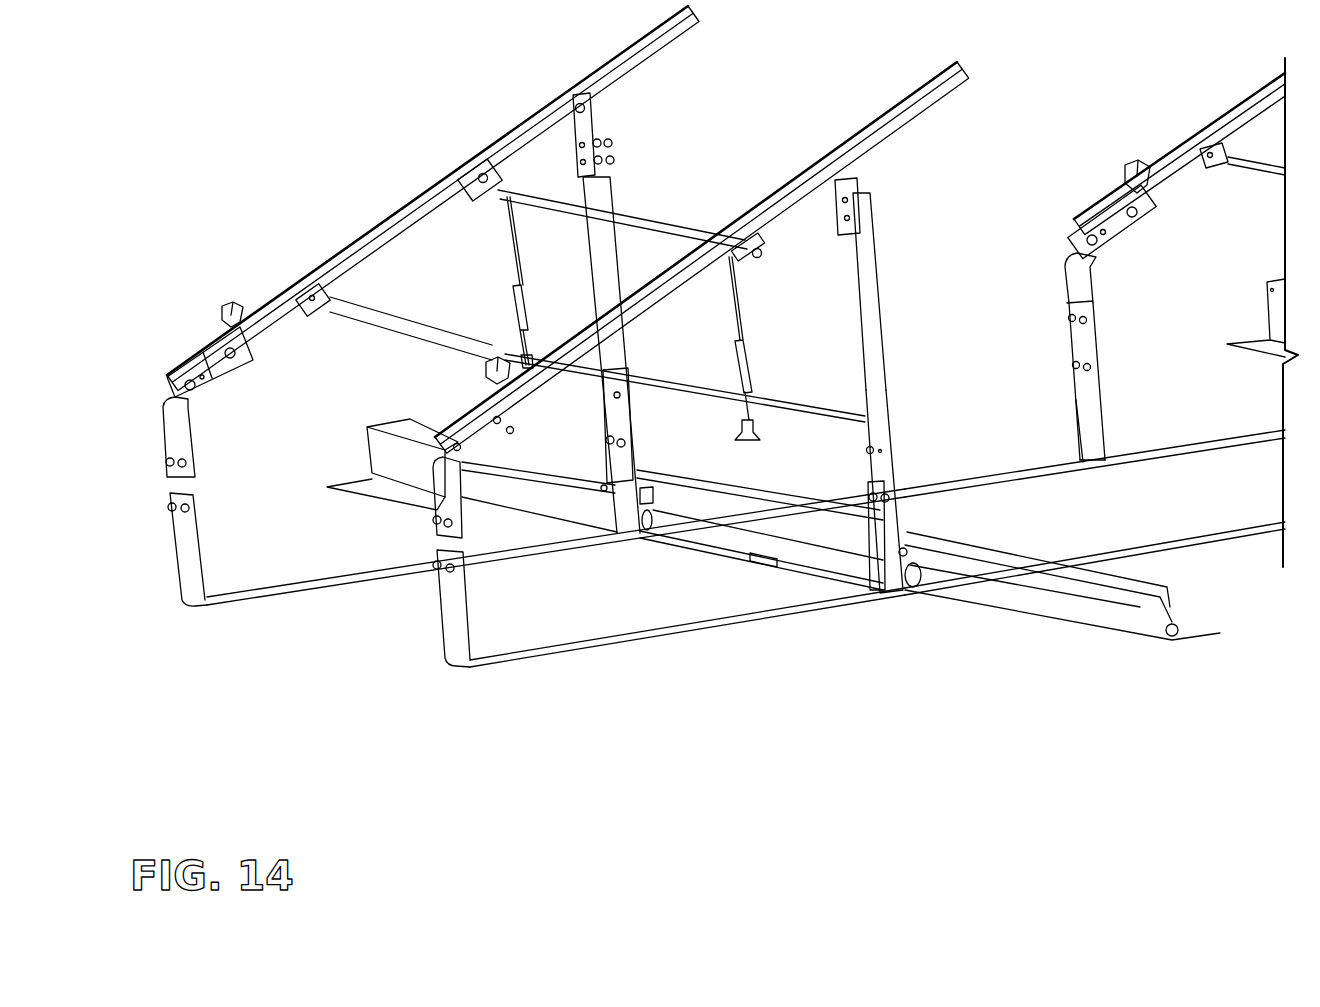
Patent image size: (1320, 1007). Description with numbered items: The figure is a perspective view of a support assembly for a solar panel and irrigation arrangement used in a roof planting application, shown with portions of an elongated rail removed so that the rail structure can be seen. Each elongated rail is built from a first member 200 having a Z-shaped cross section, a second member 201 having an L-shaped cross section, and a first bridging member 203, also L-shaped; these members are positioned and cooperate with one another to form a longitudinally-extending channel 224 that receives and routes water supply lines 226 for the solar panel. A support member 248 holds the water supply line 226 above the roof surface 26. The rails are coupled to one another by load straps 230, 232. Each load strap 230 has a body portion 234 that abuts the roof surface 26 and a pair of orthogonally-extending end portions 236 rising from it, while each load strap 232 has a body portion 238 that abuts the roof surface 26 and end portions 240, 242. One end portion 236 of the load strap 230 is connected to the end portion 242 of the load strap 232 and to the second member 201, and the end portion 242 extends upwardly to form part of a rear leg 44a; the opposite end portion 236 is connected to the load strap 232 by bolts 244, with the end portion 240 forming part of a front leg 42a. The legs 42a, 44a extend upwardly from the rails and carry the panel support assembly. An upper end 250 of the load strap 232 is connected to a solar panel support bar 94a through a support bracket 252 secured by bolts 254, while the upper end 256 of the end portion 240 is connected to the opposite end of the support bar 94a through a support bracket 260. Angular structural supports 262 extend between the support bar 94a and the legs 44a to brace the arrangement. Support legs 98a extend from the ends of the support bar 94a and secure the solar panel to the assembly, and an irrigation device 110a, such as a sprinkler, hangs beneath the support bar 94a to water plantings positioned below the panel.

The roof surface 26 is at (290, 734).
The front leg 42a is at (685, 459).
The rear leg 44a is at (913, 393).
The solar panel support bar 94a is at (771, 183).
The support leg 98a is at (482, 360).
The irrigation device 110a is at (527, 320).
The first member 200 is at (764, 529).
The second member 201 is at (370, 508).
The first bridging member 203 is at (773, 548).
The channel 224 is at (1170, 607).
The water supply line 226 is at (993, 593).
The load strap 230 is at (556, 603).
The load strap 232 is at (957, 473).
The body portion 234 is at (623, 637).
The end portion 236 is at (450, 633).
The body portion 238 is at (1087, 410).
The end portion 240 is at (878, 370).
The end portion 242 is at (868, 495).
The bolts 244 is at (1076, 368).
The support member 248 is at (837, 573).
The upper end 250 is at (1077, 300).
The support bracket 252 is at (1095, 295).
The bolts 254 is at (1070, 318).
The upper end 256 is at (867, 237).
The support bracket 260 is at (605, 150).
The angular structural support 262 is at (657, 373).